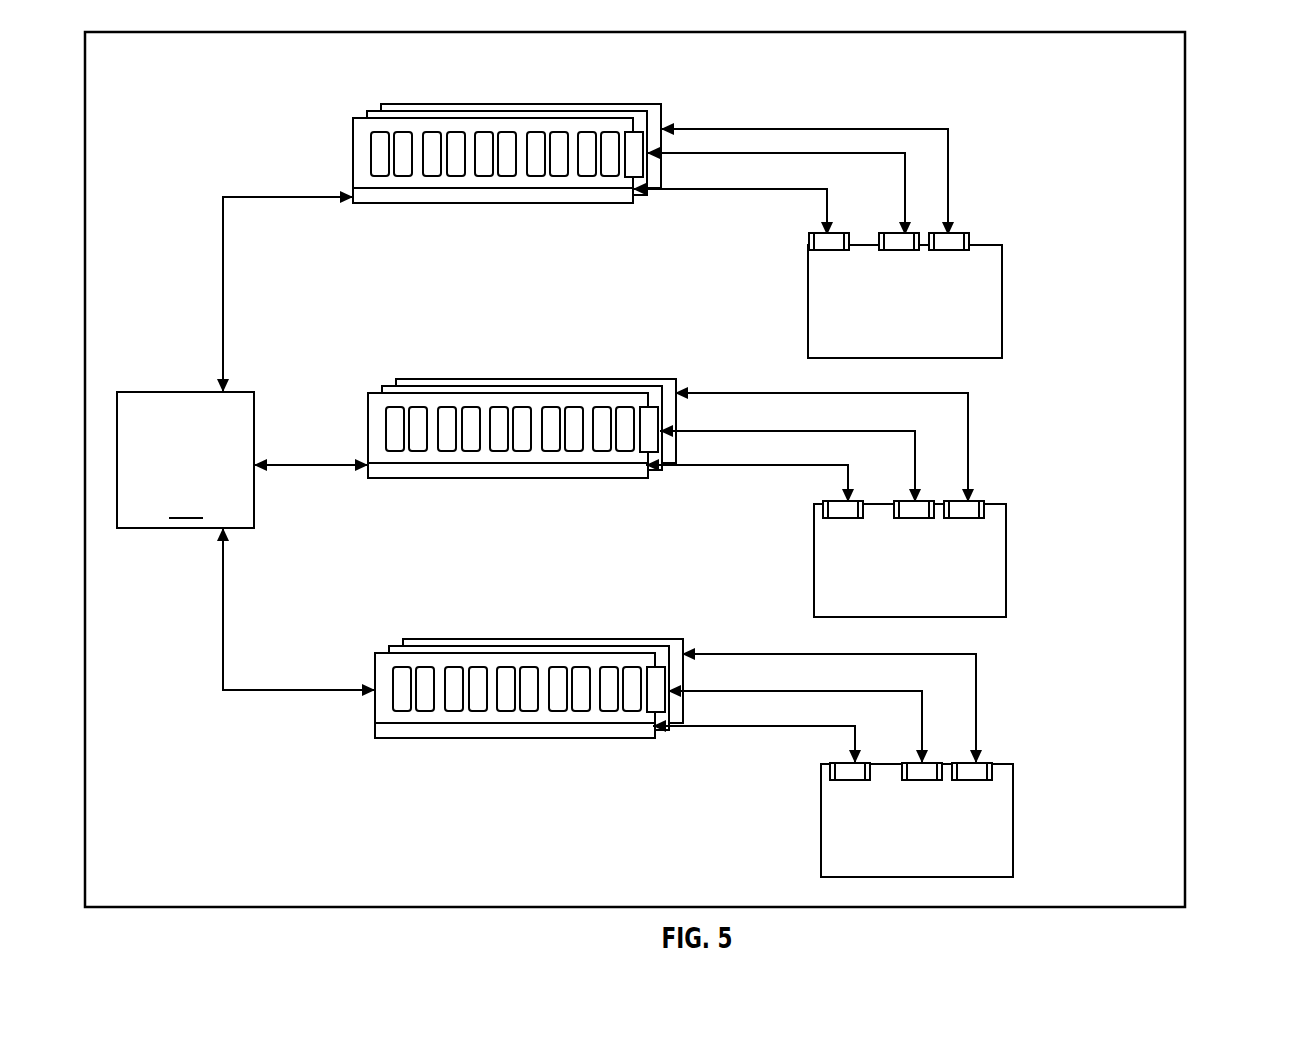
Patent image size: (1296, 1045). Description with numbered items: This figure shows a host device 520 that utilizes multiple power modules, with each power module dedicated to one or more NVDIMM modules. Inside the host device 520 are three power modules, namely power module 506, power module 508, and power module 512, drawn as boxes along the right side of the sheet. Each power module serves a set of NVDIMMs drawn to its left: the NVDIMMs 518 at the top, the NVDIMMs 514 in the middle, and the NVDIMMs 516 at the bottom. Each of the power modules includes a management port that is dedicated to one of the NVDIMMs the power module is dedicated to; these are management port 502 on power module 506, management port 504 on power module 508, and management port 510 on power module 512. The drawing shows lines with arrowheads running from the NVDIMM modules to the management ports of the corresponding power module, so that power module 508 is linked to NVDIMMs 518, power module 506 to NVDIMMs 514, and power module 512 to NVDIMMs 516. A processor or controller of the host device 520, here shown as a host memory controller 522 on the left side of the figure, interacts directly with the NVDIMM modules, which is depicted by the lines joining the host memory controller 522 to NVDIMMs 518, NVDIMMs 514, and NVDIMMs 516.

The management port 502 is at (820, 510).
The management port 504 is at (808, 243).
The power module 506 is at (1006, 562).
The power module 508 is at (1002, 300).
The management port 510 is at (828, 770).
The power module 512 is at (1013, 823).
The NVDIMMs 514 is at (523, 380).
The NVDIMMs 516 is at (445, 640).
The NVDIMMs 518 is at (425, 103).
The host device 520 is at (1185, 470).
The host memory controller 522 is at (185, 460).